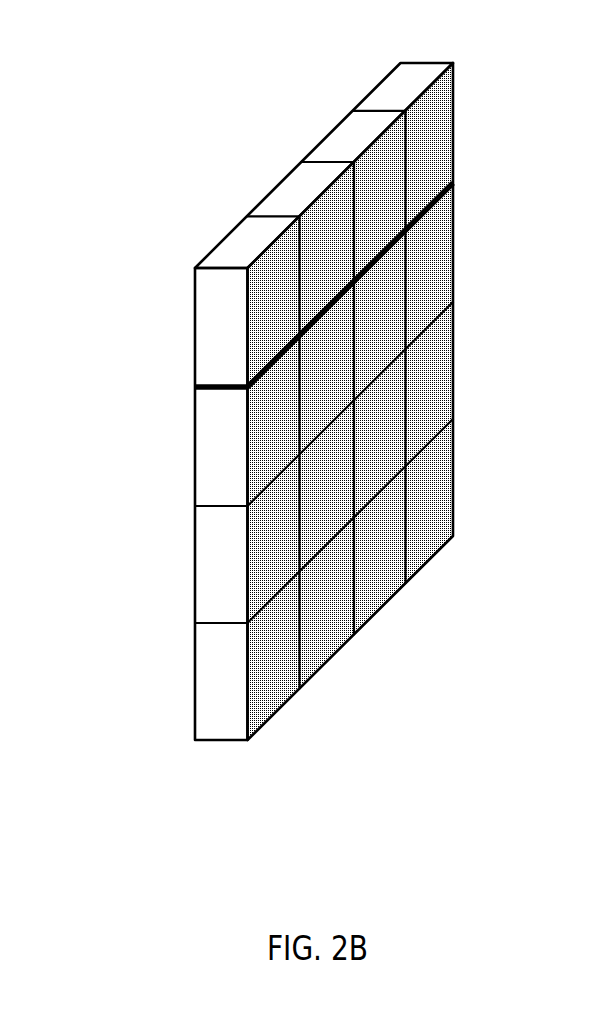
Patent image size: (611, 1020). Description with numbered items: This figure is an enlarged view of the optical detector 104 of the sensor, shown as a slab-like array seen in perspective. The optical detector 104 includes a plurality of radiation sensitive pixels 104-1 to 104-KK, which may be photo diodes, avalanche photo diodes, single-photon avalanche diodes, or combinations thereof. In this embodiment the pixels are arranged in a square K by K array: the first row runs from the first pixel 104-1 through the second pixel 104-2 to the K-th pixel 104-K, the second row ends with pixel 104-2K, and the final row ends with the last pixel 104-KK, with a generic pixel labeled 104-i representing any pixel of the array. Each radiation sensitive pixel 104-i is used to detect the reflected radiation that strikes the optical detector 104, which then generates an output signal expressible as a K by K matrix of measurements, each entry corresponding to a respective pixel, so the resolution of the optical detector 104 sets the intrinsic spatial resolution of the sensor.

The optical detector 104 is at (170, 141).
The radiation sensitive pixel 104-1 is at (267, 288).
The radiation sensitive pixel 104-2 is at (335, 248).
The radiation sensitive pixel 104-K is at (419, 147).
The radiation sensitive pixel 104-2K is at (434, 253).
The radiation sensitive pixel 104-i is at (434, 383).
The radiation sensitive pixel 104-KK is at (434, 502).